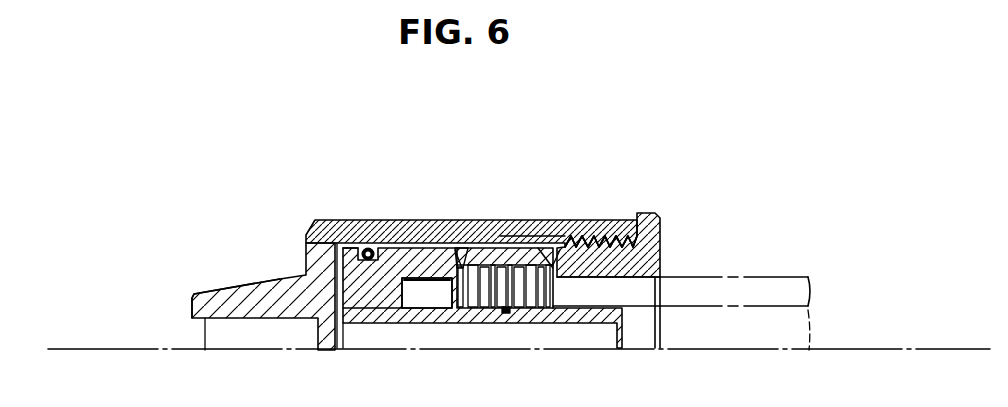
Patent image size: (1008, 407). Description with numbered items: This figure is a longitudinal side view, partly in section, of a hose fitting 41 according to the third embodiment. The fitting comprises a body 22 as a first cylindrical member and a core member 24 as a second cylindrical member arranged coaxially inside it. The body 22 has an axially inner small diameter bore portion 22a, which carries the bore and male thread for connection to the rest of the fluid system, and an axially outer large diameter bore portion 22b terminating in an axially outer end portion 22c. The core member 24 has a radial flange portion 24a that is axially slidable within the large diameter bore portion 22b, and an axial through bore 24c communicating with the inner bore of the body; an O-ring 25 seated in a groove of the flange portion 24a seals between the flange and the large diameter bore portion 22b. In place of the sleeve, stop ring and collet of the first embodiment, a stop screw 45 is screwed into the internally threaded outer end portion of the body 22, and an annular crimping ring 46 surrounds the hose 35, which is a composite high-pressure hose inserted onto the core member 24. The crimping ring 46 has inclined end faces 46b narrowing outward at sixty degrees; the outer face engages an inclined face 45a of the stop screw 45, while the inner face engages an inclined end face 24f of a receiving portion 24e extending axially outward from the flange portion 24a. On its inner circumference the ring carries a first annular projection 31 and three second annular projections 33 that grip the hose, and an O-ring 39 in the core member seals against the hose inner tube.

The body 22 is at (277, 247).
The small diameter bore portion 22a is at (220, 286).
The large diameter bore portion 22b is at (405, 220).
The axially outer end portion 22c is at (612, 220).
The core member 24 is at (313, 220).
The radial flange portion 24a is at (345, 226).
The axial through bore 24c is at (617, 307).
The receiving portion 24e is at (435, 247).
The inclined end face 24f is at (478, 224).
The O-ring 25 is at (368, 247).
The first annular projection 31 is at (555, 283).
The second annular projections 33 is at (420, 308).
The high-pressure hose 35 is at (763, 277).
The O-ring 39 is at (505, 311).
The hose fitting 41 is at (726, 202).
The stop screw 45 is at (653, 213).
The inclined face 45a is at (552, 224).
The annular crimping ring 46 is at (517, 265).
The inclined end faces 46b is at (455, 224).